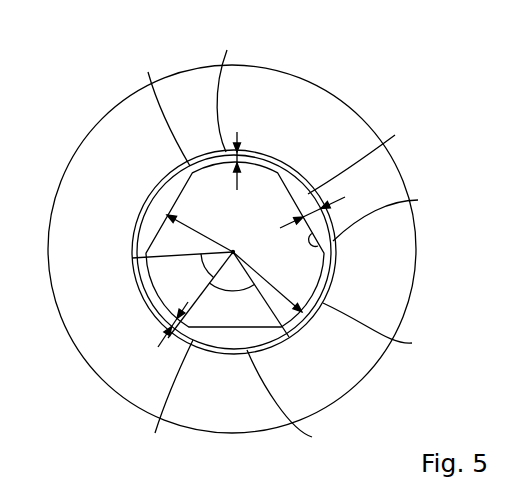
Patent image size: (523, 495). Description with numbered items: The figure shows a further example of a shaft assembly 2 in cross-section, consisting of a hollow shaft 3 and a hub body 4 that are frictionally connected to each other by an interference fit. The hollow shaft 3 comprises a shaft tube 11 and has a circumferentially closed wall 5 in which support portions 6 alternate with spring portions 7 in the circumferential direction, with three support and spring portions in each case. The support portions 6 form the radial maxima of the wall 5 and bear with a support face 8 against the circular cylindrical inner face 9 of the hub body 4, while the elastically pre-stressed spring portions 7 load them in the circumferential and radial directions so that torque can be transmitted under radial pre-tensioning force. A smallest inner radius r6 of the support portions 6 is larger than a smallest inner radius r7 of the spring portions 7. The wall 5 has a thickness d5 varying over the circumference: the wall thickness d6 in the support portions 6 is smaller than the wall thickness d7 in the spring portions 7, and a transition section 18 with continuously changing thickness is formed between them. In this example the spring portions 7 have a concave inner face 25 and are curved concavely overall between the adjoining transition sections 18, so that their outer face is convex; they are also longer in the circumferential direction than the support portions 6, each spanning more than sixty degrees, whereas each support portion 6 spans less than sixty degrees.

The shaft assembly 2 is at (93, 87).
The hollow shaft 3 is at (283, 163).
The shaft tube 11 is at (234, 252).
The hub body 4 is at (293, 71).
The wall 5 is at (169, 411).
The support portions 6 is at (224, 83).
The spring portions 7 is at (366, 152).
The support face 8 is at (382, 330).
The inner face 9 is at (294, 410).
The transition section 18 is at (158, 99).
The concave inner face 25 is at (386, 218).
The wall thickness d5 is at (159, 340).
The wall thickness of the support portions d6 is at (252, 158).
The wall thickness of the spring portions d7 is at (329, 205).
The smallest inner radius of the support portions r6 is at (271, 282).
The smallest inner radius of the spring portions r7 is at (200, 225).